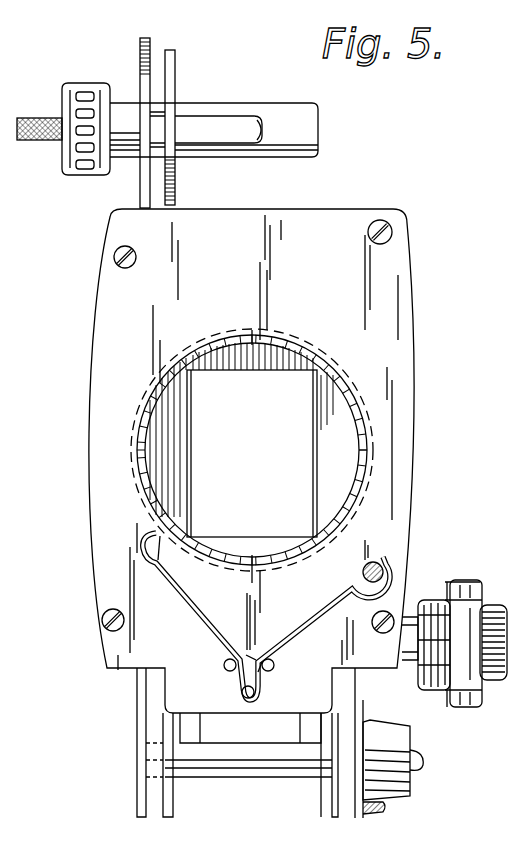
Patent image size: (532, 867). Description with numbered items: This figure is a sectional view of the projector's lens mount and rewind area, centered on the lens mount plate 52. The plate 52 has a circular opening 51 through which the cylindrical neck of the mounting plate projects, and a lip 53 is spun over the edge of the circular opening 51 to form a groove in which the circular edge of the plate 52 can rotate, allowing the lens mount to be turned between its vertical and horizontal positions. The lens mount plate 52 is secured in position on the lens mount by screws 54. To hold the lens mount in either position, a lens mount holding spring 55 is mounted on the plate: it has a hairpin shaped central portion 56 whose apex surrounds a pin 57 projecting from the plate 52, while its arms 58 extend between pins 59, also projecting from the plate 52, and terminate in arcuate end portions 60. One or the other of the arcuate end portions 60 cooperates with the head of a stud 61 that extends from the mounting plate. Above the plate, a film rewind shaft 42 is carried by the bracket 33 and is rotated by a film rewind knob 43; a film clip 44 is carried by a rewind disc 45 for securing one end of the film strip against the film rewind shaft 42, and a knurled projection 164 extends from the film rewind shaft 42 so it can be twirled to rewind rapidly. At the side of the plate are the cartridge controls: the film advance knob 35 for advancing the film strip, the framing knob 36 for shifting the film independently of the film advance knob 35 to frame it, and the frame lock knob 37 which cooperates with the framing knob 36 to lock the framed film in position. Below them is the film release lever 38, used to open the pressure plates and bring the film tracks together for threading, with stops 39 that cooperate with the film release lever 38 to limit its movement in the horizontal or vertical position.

The bracket 33 is at (142, 42).
The film advance knob 35 is at (462, 590).
The framing knob 36 is at (430, 690).
The frame lock knob 37 is at (501, 659).
The film release lever 38 is at (408, 777).
The stops 39 is at (386, 808).
The film rewind shaft 42 is at (262, 133).
The film rewind knob 43 is at (84, 85).
The film clip 44 is at (200, 128).
The rewind disc 45 is at (172, 52).
The circular opening 51 is at (356, 424).
The lens mount plate 52 is at (400, 312).
The lip 53 is at (330, 368).
The screws 54 is at (137, 257).
The lens mount holding spring 55 is at (268, 624).
The hairpin shaped central portion 56 is at (274, 667).
The pin 57 is at (255, 692).
The arms 58 is at (206, 611).
The pins 59 is at (224, 664).
The arcuate end portions 60 is at (142, 560).
The stud 61 is at (375, 560).
The knurled projection 164 is at (28, 141).